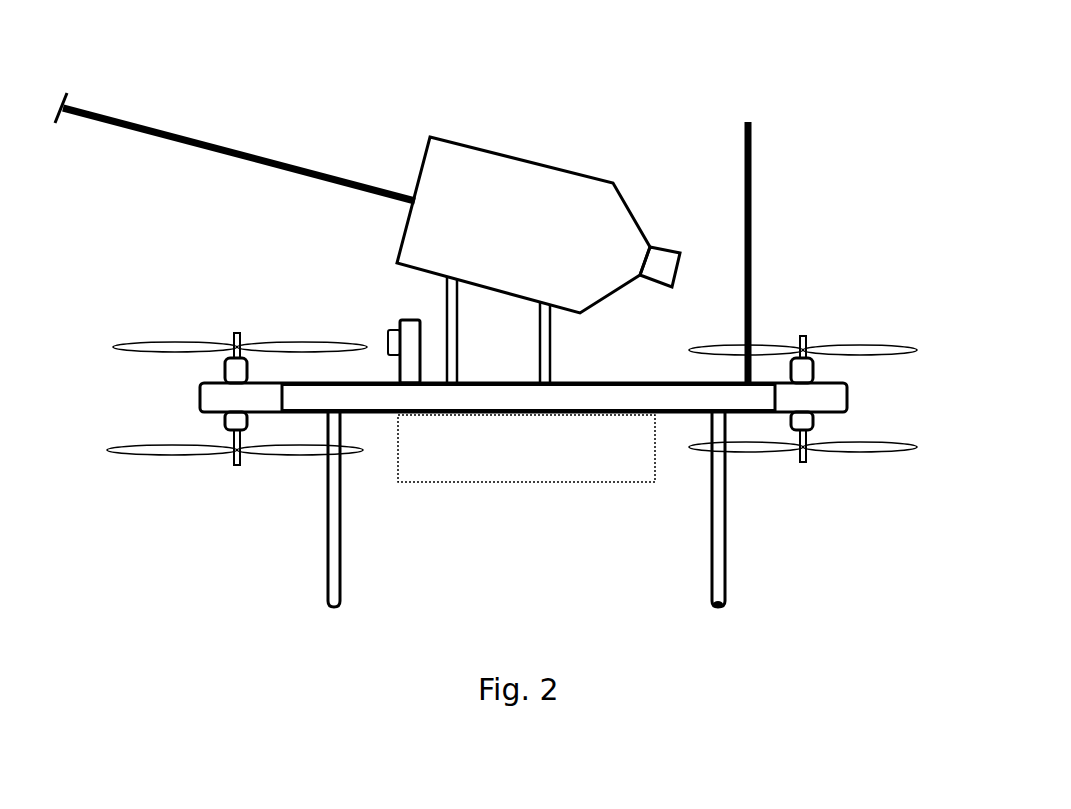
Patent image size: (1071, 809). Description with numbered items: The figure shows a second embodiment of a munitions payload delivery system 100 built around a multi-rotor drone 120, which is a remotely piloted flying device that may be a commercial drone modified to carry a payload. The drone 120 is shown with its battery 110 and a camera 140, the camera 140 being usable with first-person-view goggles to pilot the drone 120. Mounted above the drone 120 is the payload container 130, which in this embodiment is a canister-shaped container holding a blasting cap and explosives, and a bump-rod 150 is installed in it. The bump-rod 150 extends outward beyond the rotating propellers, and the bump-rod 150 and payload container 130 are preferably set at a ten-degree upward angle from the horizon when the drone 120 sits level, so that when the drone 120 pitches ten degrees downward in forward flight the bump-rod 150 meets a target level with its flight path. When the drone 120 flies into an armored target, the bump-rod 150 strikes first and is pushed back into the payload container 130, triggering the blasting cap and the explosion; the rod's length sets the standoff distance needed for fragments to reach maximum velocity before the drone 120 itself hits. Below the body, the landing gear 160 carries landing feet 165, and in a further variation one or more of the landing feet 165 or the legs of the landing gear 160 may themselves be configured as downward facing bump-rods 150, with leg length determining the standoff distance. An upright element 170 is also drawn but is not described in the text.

The munitions payload delivery system 100 is at (508, 33).
The battery 110 is at (518, 458).
The multi-rotor drone 120 is at (212, 313).
The payload container 130 is at (533, 147).
The camera 140 is at (385, 328).
The bump-rod 150 is at (275, 143).
The landing gear 160 is at (693, 553).
The landing feet 165 is at (740, 607).
The antenna 170 is at (767, 172).